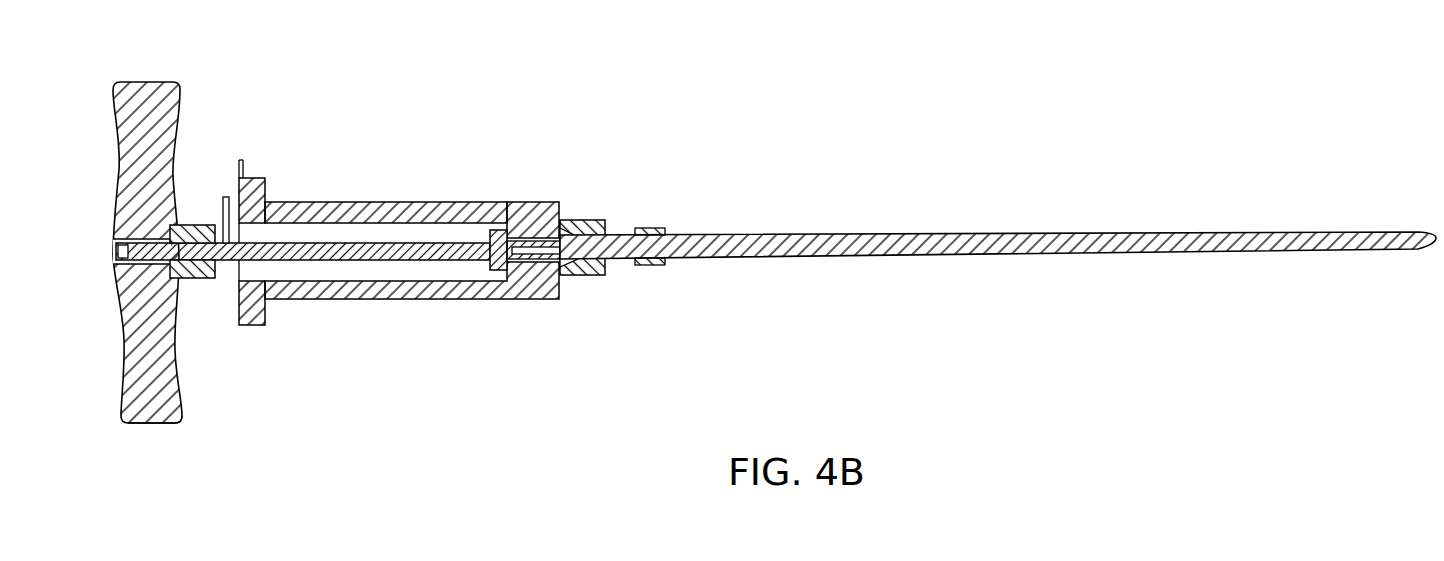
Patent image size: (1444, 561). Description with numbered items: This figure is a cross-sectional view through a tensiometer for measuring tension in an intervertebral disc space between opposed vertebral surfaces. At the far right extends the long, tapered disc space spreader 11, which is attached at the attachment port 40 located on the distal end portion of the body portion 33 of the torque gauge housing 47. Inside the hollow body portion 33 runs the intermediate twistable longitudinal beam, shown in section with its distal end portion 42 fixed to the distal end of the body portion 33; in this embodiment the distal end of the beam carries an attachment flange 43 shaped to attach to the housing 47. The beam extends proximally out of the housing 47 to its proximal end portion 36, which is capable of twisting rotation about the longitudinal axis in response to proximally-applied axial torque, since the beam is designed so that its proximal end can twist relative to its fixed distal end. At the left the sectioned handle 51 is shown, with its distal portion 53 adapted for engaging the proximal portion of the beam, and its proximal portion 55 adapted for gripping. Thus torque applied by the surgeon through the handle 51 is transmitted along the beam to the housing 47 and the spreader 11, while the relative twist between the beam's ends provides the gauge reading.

The disc space spreader 11 is at (696, 260).
The body portion 33 is at (349, 202).
The proximal end portion 36 is at (227, 262).
The attachment port 40 is at (581, 220).
The distal end portion 42 is at (455, 243).
The attachment flange 43 is at (490, 270).
The housing 47 is at (398, 203).
The handle 51 is at (145, 77).
The distal portion 53 is at (193, 280).
The proximal portion 55 is at (165, 413).